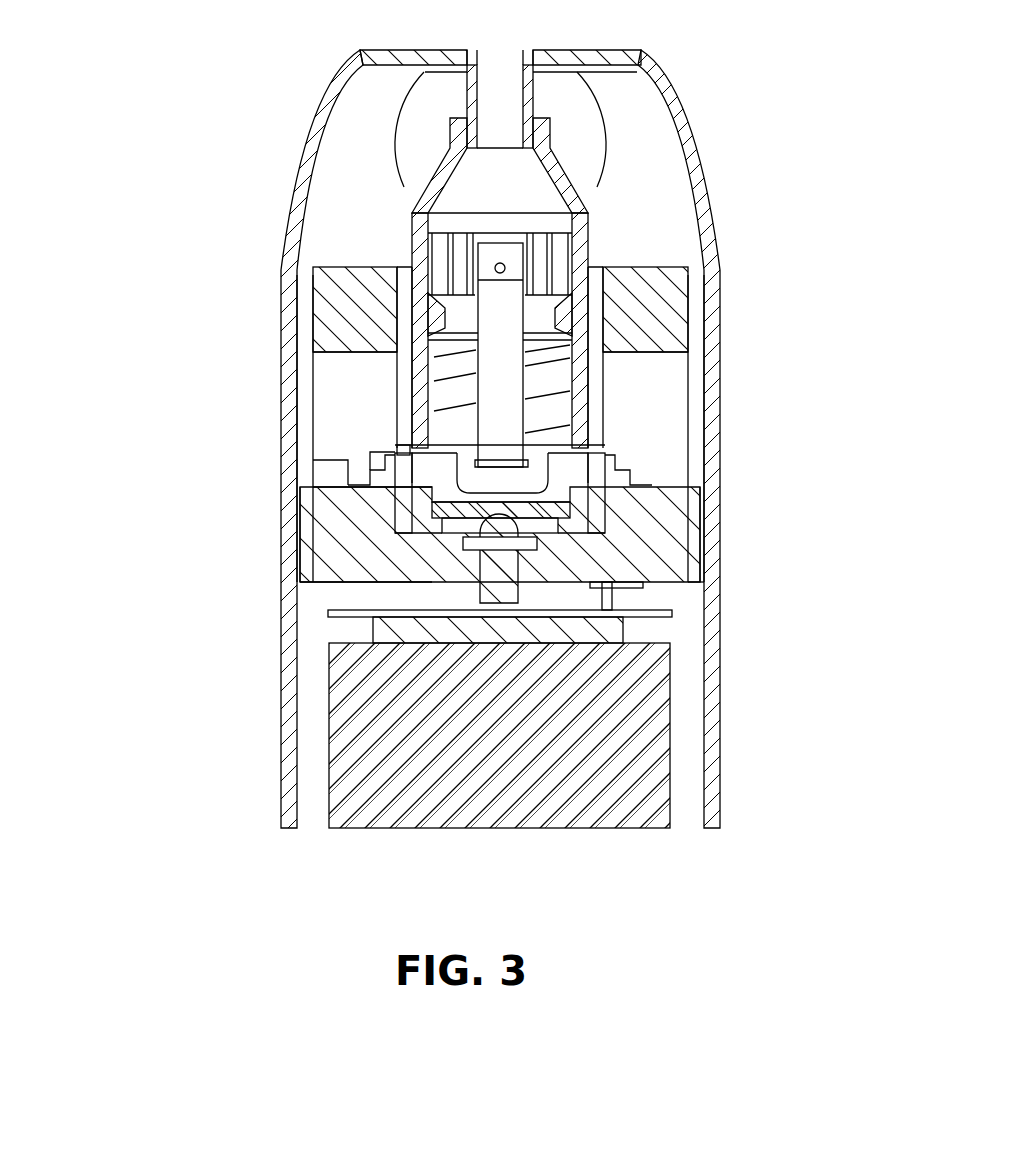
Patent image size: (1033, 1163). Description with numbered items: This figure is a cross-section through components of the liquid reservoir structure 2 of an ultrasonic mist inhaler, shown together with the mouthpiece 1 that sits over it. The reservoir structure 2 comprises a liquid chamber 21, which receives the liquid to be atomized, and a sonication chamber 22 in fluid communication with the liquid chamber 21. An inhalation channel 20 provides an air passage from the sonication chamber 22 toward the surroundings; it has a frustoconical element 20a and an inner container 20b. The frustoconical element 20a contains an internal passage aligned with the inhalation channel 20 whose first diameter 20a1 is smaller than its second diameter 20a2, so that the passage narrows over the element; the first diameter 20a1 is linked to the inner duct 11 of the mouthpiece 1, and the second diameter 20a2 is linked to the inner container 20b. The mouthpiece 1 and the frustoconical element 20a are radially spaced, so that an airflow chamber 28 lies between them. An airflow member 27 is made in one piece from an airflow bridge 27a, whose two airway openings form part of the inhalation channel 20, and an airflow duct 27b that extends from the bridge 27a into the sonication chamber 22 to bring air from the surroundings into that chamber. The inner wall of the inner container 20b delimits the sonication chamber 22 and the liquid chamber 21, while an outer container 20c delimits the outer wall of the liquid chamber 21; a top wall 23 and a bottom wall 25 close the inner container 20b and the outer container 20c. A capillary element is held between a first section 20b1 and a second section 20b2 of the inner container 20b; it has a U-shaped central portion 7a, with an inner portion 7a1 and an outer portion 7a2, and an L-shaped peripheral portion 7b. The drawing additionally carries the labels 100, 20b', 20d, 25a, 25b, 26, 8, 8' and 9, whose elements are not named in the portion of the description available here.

The aerosol generating device 100 is at (162, 78).
The mouthpiece 1 is at (288, 168).
The liquid reservoir structure 2 is at (240, 367).
The inner duct 11 is at (465, 100).
The inhalation channel 20 is at (487, 80).
The frustoconical element 20a is at (686, 180).
The first diameter 20a1 is at (640, 104).
The second diameter 20a2 is at (698, 220).
The inner container 20b is at (482, 386).
The first section 20b1 is at (390, 451).
The tube wall flange 20b' is at (202, 484).
The second section 20b2 is at (386, 499).
The outer container 20c is at (290, 482).
The inner sleeve 20d is at (400, 312).
The liquid chamber 21 is at (330, 465).
The sonication chamber 22 is at (600, 342).
The top wall 23 is at (340, 290).
The bottom wall 25 is at (660, 525).
The base chamber 25a is at (684, 487).
The base bottom 25b is at (305, 520).
The outer sleeve 26 is at (700, 546).
The airflow member 27 is at (422, 208).
The airflow bridge 27a is at (410, 277).
The airflow duct 27b is at (575, 252).
The airflow chamber 28 is at (378, 128).
The central portion 7a is at (400, 390).
The inner portion 7a1 is at (418, 515).
The outer portion 7a2 is at (600, 470).
The peripheral portion 7b is at (558, 461).
The connector boss 8 is at (595, 578).
The connector nut 8' is at (368, 578).
The piston 9 is at (525, 318).